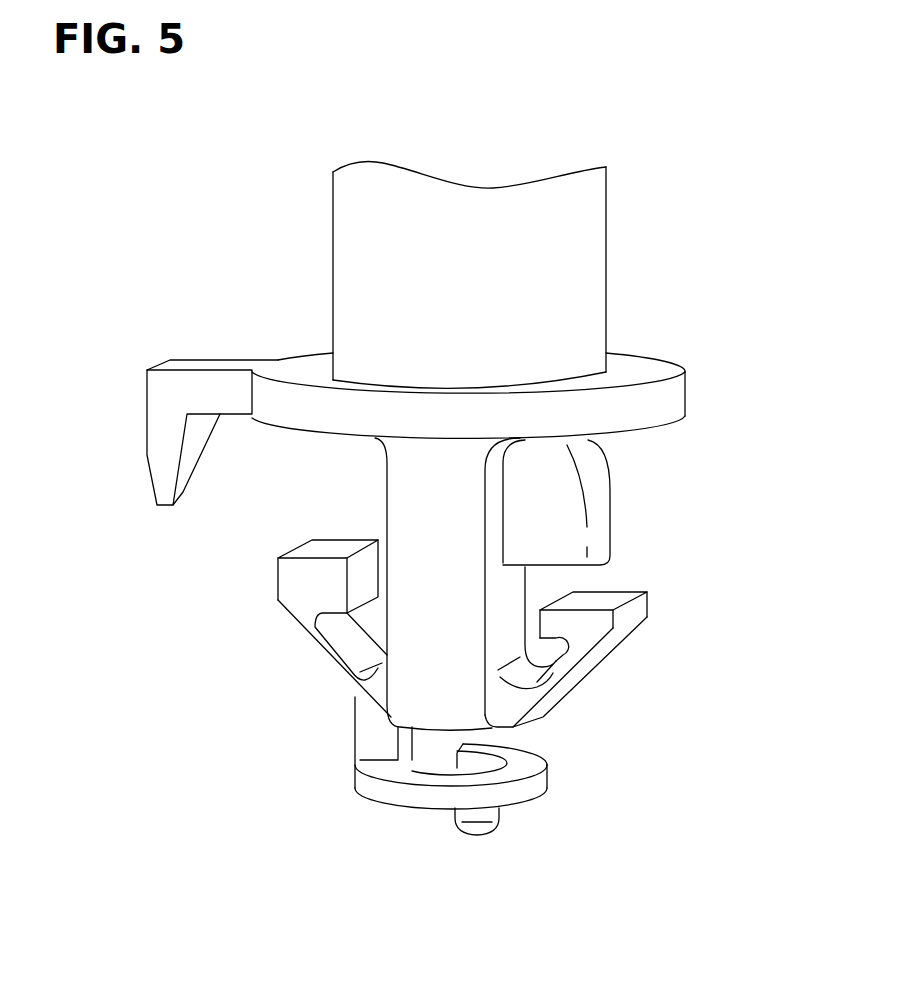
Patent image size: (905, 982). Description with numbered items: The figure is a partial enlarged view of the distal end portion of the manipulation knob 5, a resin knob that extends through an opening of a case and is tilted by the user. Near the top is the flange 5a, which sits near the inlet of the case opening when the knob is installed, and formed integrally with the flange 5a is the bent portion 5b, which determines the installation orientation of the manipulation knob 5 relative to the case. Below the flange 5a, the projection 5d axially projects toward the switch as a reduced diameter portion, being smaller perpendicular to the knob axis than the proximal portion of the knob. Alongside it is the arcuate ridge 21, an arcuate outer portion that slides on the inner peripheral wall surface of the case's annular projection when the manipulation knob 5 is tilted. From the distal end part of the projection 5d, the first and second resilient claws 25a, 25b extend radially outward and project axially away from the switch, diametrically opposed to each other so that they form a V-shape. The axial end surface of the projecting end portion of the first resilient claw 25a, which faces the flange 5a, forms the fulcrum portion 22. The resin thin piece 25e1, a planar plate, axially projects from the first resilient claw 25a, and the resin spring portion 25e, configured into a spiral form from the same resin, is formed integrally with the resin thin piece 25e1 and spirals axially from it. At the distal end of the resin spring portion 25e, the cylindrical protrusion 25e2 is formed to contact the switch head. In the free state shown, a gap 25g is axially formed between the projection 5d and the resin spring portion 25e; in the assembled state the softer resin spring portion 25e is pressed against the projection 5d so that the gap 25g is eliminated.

The manipulation knob 5 is at (592, 220).
The flange 5a is at (640, 365).
The bent portion 5b is at (158, 443).
The projection 5d is at (453, 527).
The arcuate ridge 21 is at (603, 480).
The fulcrum portion 22 is at (293, 553).
The first resilient claw 25a is at (302, 608).
The second resilient claw 25b is at (592, 633).
The resin spring portion 25e is at (403, 792).
The resin thin piece 25e1 is at (367, 723).
The cylindrical protrusion 25e2 is at (477, 835).
The gap 25g is at (488, 737).